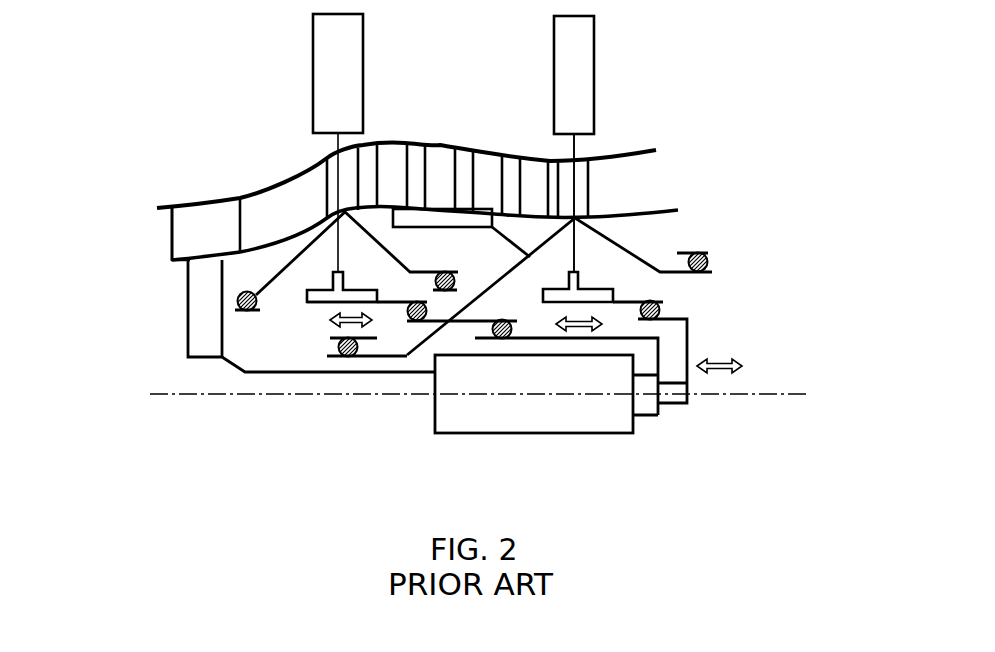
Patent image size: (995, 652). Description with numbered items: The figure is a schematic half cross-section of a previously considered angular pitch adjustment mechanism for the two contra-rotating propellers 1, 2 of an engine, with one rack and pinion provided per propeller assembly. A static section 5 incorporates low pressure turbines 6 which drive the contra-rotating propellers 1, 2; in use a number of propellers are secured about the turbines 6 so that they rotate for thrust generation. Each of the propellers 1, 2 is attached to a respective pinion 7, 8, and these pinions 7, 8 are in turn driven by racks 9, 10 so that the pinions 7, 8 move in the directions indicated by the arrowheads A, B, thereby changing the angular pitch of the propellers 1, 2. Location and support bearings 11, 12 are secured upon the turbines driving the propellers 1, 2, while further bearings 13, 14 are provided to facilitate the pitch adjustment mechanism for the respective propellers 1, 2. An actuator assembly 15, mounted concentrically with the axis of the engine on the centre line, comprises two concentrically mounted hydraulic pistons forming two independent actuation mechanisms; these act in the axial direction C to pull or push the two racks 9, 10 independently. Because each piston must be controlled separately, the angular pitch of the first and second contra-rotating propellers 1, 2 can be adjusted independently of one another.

The propeller 1 is at (313, 43).
The propeller 2 is at (594, 40).
The static section 5 is at (197, 204).
The low pressure turbines 6 is at (446, 162).
The pinion 7 is at (328, 286).
The pinion 8 is at (564, 280).
The rack 9 is at (317, 299).
The rack 10 is at (596, 292).
The location and support bearing 11 is at (237, 300).
The location and support bearing 12 is at (710, 261).
The bearing 13 is at (418, 302).
The bearing 14 is at (660, 308).
The actuator assembly 15 is at (535, 420).
The arrowhead A is at (330, 322).
The arrowhead B is at (575, 331).
The axial direction C is at (741, 361).